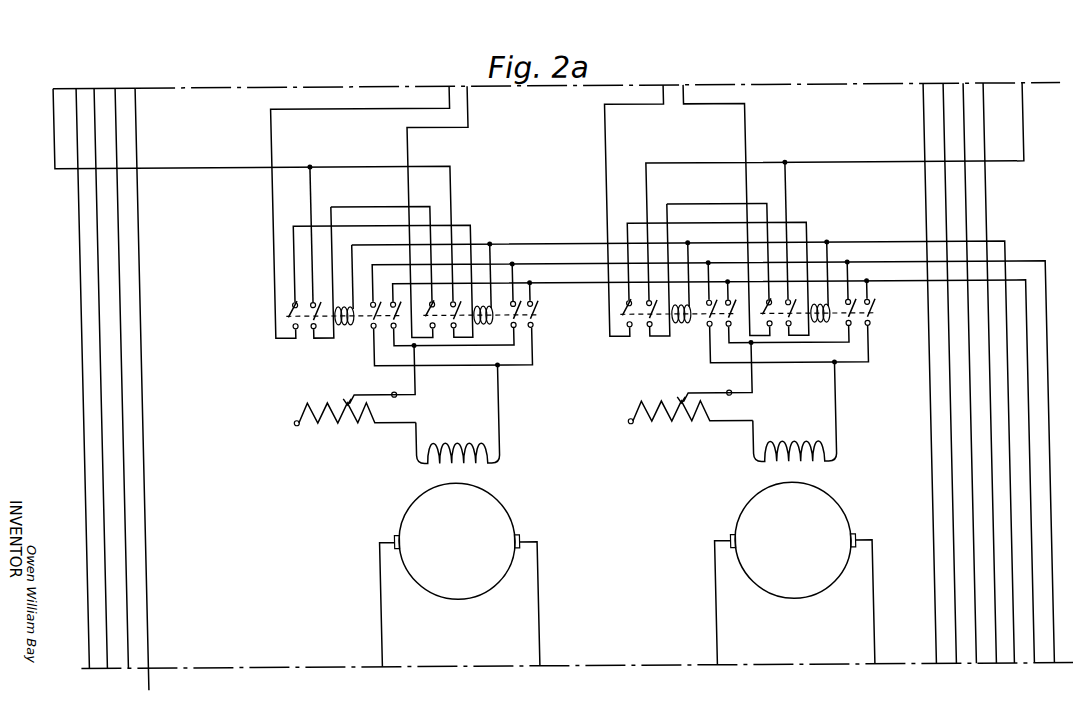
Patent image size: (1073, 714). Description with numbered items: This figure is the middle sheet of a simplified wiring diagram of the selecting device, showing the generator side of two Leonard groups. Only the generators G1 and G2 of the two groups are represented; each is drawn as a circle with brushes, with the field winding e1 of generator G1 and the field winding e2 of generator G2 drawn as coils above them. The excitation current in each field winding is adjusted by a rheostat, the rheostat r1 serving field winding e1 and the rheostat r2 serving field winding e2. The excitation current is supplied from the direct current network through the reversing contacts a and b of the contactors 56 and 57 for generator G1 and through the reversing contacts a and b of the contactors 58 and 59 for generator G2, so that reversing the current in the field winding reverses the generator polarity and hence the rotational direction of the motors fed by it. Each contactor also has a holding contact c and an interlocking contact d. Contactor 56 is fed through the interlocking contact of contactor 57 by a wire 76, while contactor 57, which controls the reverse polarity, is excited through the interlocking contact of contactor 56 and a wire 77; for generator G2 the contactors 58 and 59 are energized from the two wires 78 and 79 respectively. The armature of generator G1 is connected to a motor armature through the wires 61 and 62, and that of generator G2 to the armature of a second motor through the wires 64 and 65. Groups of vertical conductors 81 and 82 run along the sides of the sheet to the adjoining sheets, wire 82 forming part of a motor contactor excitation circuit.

The contactor 56 is at (343, 273).
The contactor 57 is at (482, 286).
The contactor 58 is at (678, 270).
The contactor 59 is at (819, 284).
The wire 61 is at (381, 605).
The wire 62 is at (539, 604).
The wire 64 is at (716, 603).
The wire 65 is at (875, 602).
The wire 76 is at (473, 110).
The wire 77 is at (452, 100).
The wire 78 is at (646, 102).
The wire 79 is at (722, 102).
The bus conductors 81 is at (95, 121).
The wire 82 is at (945, 110).
The rheostat r1 is at (355, 394).
The rheostat r2 is at (690, 392).
The field winding e1 is at (456, 414).
The field winding e2 is at (793, 411).
The generator G1 is at (457, 541).
The generator G2 is at (793, 540).